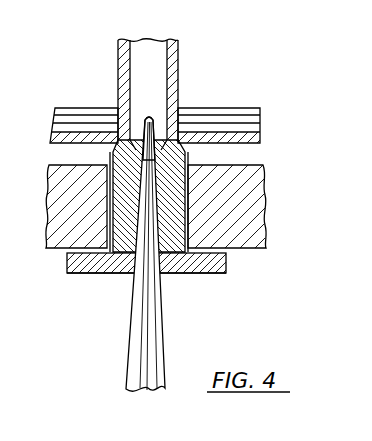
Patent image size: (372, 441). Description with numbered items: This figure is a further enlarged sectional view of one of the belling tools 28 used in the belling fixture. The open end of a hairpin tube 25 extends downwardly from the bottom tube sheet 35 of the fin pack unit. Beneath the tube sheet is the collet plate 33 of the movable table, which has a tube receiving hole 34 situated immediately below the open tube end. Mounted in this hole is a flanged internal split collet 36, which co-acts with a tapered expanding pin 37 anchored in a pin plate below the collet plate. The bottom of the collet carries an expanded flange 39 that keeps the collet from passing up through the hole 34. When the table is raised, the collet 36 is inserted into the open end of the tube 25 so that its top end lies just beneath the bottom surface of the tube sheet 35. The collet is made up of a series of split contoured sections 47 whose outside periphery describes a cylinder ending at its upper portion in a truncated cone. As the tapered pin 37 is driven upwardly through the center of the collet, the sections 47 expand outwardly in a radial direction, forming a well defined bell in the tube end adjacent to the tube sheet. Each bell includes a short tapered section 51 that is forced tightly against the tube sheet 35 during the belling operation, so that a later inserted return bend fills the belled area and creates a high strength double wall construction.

The hairpin tube 25 is at (178, 86).
The belling tool 28 is at (185, 275).
The collet plate 33 is at (265, 205).
The tube receiving hole 34 is at (186, 195).
The bottom tube sheet 35 is at (50, 140).
The flanged internal split collet 36 is at (110, 218).
The tapered expanding pin 37 is at (125, 355).
The expanded flange 39 is at (228, 263).
The split contoured section 47 is at (188, 165).
The short tapered section 51 is at (185, 140).